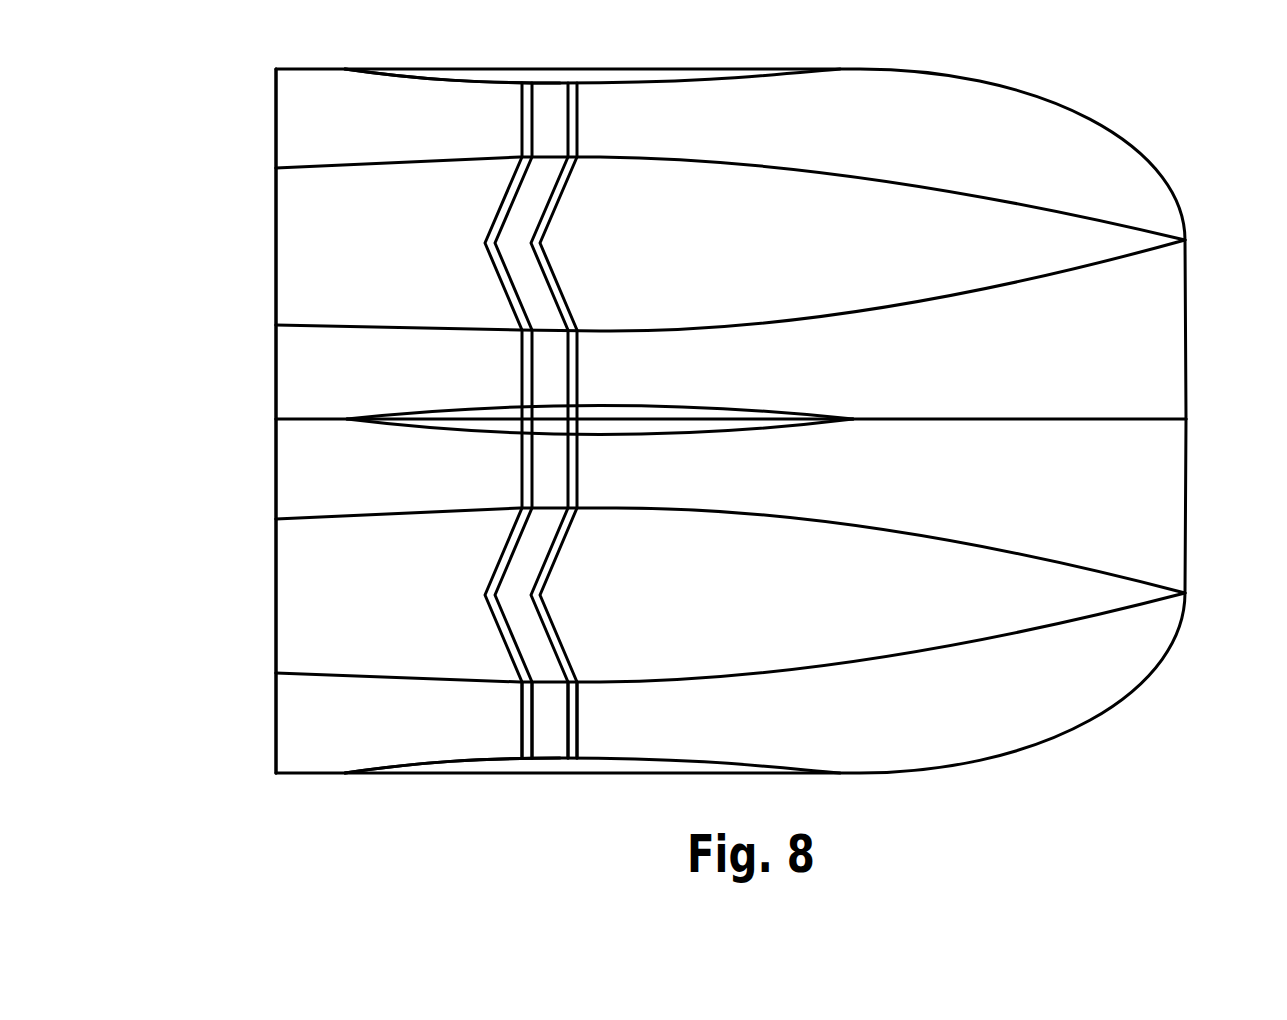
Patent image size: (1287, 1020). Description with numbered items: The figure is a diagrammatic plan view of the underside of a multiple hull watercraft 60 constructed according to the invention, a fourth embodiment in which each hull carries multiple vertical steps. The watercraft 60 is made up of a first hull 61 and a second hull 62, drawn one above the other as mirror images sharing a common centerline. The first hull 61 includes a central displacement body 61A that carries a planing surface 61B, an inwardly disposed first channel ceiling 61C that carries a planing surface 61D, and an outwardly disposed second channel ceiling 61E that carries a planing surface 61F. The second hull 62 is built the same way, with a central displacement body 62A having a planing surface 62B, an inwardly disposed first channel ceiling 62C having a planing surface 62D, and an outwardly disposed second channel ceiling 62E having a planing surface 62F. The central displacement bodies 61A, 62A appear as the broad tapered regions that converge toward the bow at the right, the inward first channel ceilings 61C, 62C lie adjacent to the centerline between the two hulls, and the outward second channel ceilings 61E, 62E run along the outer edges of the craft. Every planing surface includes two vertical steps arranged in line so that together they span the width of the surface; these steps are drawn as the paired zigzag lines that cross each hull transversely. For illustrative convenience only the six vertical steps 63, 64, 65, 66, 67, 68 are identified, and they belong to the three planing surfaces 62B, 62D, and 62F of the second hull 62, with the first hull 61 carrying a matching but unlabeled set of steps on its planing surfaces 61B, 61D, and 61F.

The multiple hull watercraft 60 is at (1180, 118).
The first hull 61 is at (1186, 330).
The second hull 62 is at (1186, 517).
The central displacement body 61A is at (842, 251).
The planing surface 61B is at (305, 262).
The first channel ceiling 61C is at (980, 391).
The planing surface 61D is at (305, 385).
The second channel ceiling 61E is at (980, 128).
The planing surface 61F is at (305, 125).
The central displacement body 62A is at (842, 608).
The planing surface 62B is at (305, 610).
The first channel ceiling 62C is at (980, 487).
The planing surface 62D is at (305, 483).
The second channel ceiling 62E is at (980, 748).
The planing surface 62F is at (305, 730).
The vertical step 63 is at (560, 662).
The vertical step 64 is at (510, 650).
The vertical step 65 is at (567, 490).
The vertical step 66 is at (522, 475).
The vertical step 67 is at (567, 747).
The vertical step 68 is at (523, 743).